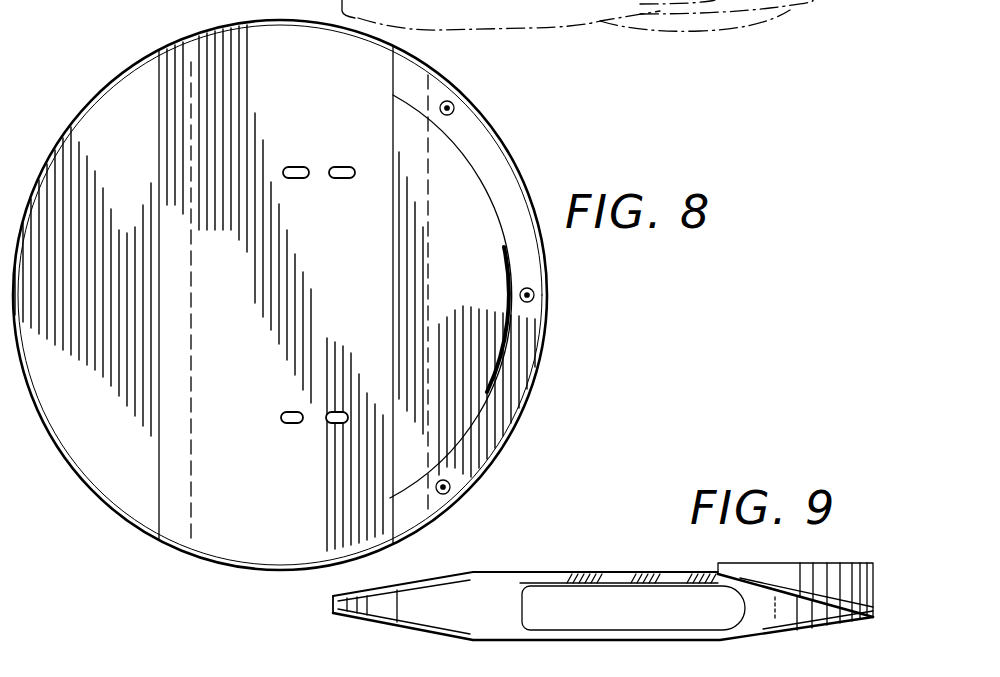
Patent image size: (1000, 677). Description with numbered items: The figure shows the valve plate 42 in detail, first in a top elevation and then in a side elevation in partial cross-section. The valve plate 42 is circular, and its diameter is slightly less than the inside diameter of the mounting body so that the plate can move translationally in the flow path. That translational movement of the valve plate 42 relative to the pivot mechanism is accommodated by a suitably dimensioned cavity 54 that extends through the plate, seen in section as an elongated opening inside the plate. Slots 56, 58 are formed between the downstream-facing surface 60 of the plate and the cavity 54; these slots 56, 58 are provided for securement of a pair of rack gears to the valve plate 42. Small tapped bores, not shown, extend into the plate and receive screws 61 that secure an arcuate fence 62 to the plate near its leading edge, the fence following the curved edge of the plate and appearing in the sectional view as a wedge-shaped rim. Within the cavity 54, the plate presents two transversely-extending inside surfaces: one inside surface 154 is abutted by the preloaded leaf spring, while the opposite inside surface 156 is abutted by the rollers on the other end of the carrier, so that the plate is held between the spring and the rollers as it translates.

In FIG. 8, the valve plate 42 is at (148, 546).
In FIG. 9, the valve plate 42 is at (325, 611).
In FIG. 9, the cavity 54 is at (645, 622).
In FIG. 8, the slot 56 is at (342, 164).
In FIG. 9, the slot 56 is at (673, 578).
In FIG. 8, the slot 58 is at (338, 424).
In FIG. 8, the downstream-facing surface 60 is at (366, 263).
In FIG. 8, the screw 61 is at (535, 292).
In FIG. 8, the arcuate fence 62 is at (490, 150).
In FIG. 9, the arcuate fence 62 is at (786, 546).
In FIG. 9, the inside surface 154 is at (743, 603).
In FIG. 9, the inside surface 156 is at (533, 591).